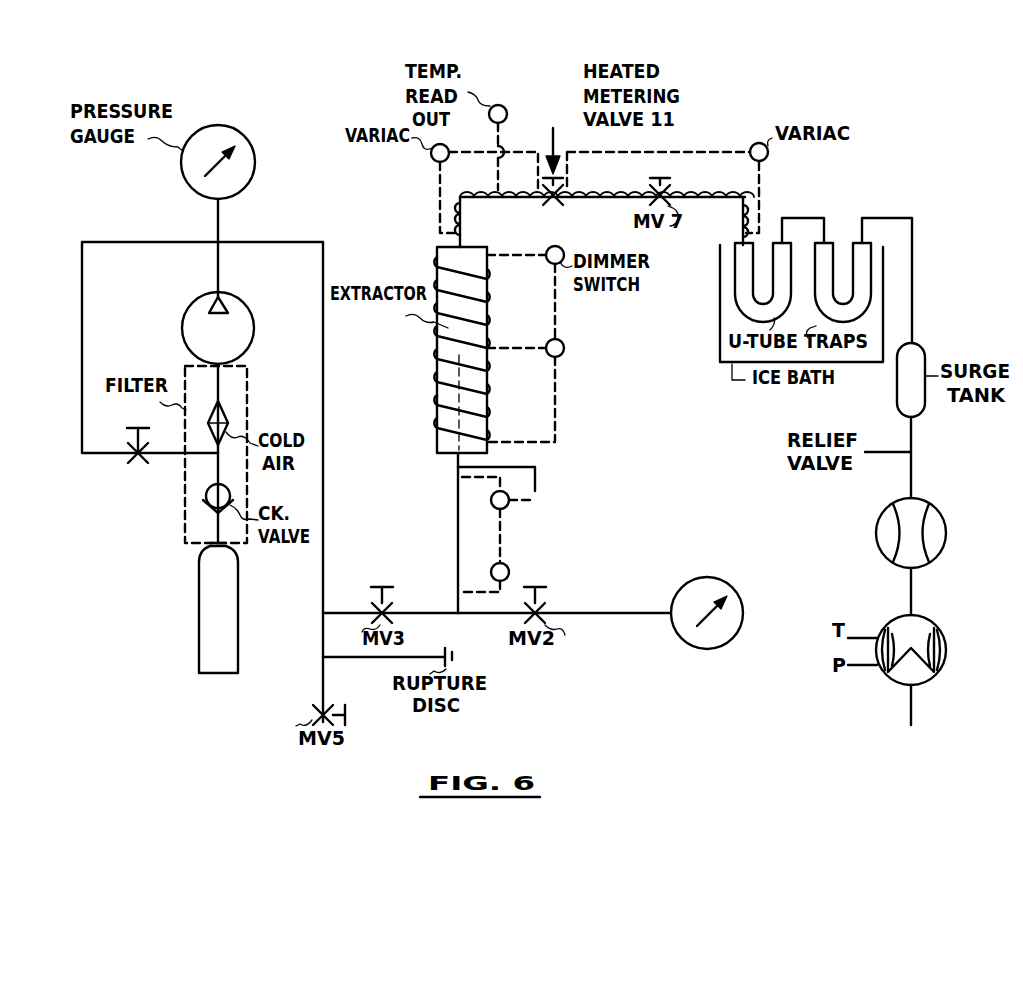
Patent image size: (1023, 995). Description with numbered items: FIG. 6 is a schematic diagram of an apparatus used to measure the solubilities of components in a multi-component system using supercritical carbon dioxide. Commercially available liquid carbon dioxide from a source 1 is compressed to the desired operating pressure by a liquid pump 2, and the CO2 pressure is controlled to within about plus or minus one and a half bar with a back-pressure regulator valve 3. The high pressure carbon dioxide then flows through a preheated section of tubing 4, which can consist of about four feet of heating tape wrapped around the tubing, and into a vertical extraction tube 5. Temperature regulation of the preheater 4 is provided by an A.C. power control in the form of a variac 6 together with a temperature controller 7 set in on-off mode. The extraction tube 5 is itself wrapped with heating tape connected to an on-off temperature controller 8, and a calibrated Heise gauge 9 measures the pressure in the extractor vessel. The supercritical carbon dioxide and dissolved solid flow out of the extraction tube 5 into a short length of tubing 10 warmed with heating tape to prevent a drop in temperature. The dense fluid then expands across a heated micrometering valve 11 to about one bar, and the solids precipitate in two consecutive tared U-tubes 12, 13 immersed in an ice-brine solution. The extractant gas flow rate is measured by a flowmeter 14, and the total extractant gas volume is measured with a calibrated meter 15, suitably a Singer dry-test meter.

The source 1 is at (198, 640).
The liquid pump 2 is at (182, 331).
The back-pressure regulator valve 3 is at (138, 466).
The preheated section of tubing 4 is at (458, 535).
The vertical extraction tube 5 is at (437, 413).
The variac 6 is at (509, 568).
The temperature controller 7 is at (510, 504).
The on-off temperature controller 8 is at (562, 343).
The Heise gauge 9 is at (703, 648).
The short length of tubing 10 is at (596, 207).
The heated micrometering valve 11 is at (556, 138).
The U-tube 12 is at (720, 287).
The U-tube 13 is at (884, 285).
The flowmeter 14 is at (876, 543).
The calibrated meter 15 is at (893, 684).